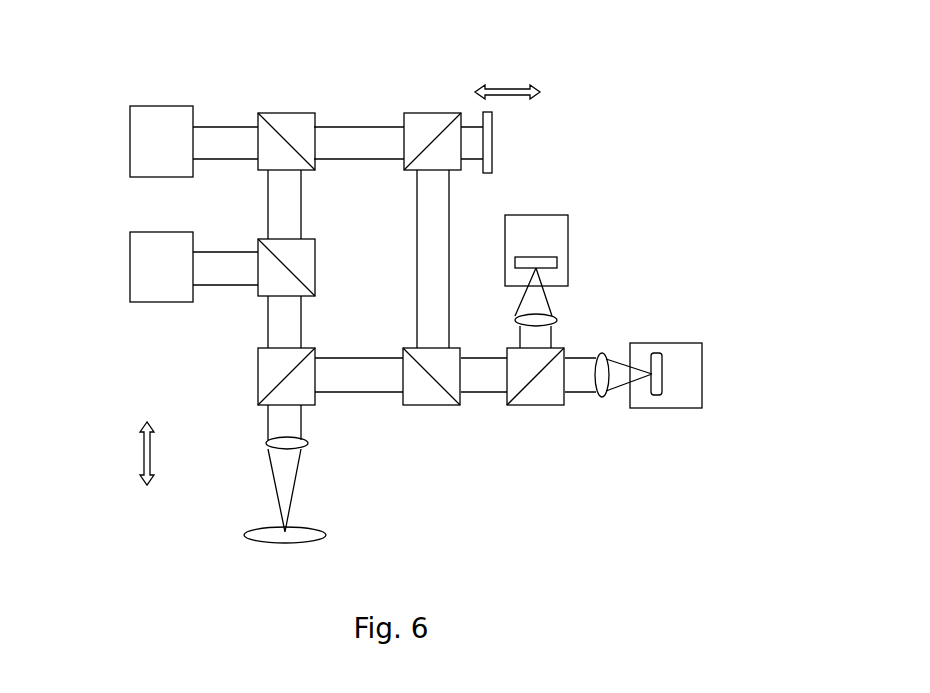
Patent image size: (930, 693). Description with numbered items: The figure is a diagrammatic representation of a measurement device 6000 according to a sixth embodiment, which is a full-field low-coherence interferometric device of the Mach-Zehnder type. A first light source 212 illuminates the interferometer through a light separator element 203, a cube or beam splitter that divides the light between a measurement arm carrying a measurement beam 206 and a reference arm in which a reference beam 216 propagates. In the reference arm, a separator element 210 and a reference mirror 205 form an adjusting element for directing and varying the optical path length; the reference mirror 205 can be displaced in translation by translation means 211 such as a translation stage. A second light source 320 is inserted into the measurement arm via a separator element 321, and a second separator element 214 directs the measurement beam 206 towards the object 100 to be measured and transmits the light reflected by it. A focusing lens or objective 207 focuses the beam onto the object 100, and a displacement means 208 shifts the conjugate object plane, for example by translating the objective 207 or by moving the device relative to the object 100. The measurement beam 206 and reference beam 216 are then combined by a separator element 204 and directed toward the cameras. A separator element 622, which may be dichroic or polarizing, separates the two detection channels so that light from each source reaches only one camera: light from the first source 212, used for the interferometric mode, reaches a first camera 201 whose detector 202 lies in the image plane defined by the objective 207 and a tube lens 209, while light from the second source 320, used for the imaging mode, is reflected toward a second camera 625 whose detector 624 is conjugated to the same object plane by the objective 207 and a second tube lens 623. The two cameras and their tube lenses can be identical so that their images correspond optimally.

The light source 212 is at (130, 142).
The light separator element 203 is at (287, 112).
The reference beam 216 is at (397, 122).
The separator element 210 is at (433, 113).
The translation means 211 is at (508, 84).
The reference mirror 205 is at (492, 138).
The measurement device 6000 is at (663, 127).
The second camera 625 is at (568, 221).
The detector 624 is at (557, 262).
The tube lens 623 is at (557, 323).
The second light source 320 is at (130, 268).
The separator element 321 is at (314, 265).
The second separator element 214 is at (258, 378).
The separator element 204 is at (430, 407).
The separator element 622 is at (537, 407).
The displacement means 208 is at (144, 460).
The focusing lens or objective 207 is at (266, 443).
The measurement beam 206 is at (296, 475).
The object 100 is at (242, 535).
The tube lens 209 is at (602, 397).
The detector 202 is at (657, 397).
The camera 201 is at (702, 375).